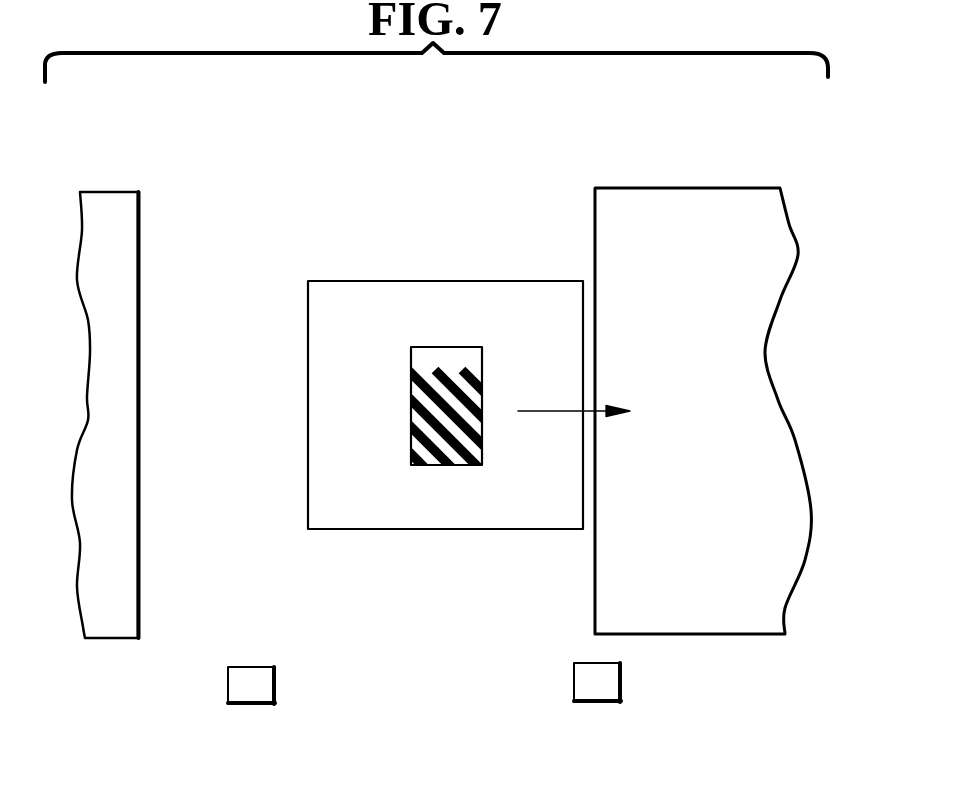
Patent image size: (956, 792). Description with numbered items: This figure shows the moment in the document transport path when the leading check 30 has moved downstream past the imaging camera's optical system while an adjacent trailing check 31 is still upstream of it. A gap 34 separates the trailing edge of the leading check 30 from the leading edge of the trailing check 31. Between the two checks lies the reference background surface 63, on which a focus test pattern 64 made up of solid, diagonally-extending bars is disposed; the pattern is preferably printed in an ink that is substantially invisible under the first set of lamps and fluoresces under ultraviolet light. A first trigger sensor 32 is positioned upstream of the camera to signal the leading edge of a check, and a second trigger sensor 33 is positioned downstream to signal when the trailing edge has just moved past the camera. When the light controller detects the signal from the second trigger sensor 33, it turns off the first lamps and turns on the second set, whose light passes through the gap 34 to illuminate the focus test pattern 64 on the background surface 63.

The check 30 is at (702, 188).
The check 31 is at (107, 192).
The first trigger sensor 32 is at (253, 704).
The second trigger sensor 33 is at (602, 702).
The gap 34 is at (486, 128).
The reference background surface 63 is at (435, 281).
The focus test pattern 64 is at (446, 465).